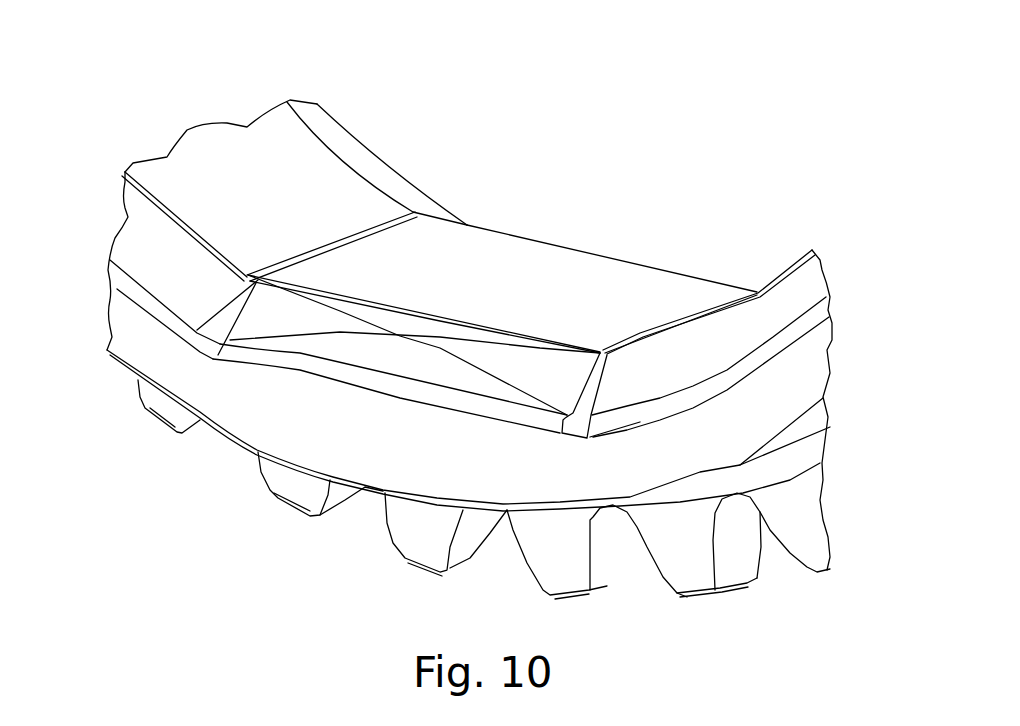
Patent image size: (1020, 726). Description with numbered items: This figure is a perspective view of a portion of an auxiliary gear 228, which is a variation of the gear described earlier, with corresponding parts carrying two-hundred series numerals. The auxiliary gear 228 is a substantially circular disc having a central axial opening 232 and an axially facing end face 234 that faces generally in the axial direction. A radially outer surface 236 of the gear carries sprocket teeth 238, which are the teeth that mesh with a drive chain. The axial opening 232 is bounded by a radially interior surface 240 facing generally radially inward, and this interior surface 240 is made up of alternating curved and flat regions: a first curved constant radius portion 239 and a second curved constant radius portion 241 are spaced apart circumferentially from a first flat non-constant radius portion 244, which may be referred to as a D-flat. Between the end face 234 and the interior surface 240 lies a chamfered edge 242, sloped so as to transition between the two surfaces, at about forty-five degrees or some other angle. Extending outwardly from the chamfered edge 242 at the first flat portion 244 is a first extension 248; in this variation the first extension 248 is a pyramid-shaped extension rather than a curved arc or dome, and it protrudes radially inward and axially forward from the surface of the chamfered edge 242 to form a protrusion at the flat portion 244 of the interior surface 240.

The auxiliary gear 228 is at (172, 150).
The central axial opening 232 is at (630, 213).
The axially facing end face 234 is at (257, 408).
The radially outer surface 236 is at (215, 425).
The sprocket teeth 238 is at (303, 489).
The first curved constant radius portion 239 is at (237, 143).
The radially interior surface 240 is at (296, 160).
The second curved constant radius portion 241 is at (667, 338).
The chamfered edge 242 is at (138, 240).
The first flat non-constant radius portion 244 is at (652, 273).
The first extension 248 is at (372, 342).